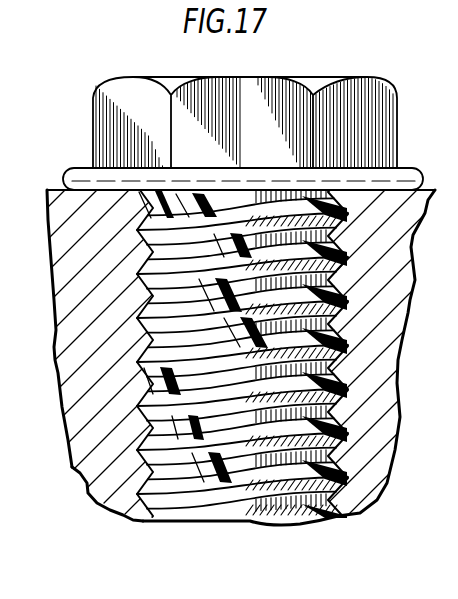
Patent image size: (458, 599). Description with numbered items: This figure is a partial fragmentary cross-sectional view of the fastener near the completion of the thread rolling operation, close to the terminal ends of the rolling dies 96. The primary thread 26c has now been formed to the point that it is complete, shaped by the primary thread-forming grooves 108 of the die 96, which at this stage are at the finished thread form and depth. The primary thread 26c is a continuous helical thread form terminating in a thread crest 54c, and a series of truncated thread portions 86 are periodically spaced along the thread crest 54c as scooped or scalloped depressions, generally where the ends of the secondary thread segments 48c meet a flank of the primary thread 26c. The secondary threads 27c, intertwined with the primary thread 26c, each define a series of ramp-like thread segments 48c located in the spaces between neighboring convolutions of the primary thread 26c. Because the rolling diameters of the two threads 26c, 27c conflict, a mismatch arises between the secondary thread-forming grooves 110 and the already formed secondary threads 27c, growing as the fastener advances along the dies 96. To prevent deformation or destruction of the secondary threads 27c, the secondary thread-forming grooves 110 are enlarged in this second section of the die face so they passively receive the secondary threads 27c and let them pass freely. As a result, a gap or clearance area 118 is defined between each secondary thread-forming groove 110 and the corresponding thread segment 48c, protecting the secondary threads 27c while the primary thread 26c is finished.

The primary thread 26c is at (135, 222).
The secondary thread 27c is at (163, 252).
The die 96 is at (53, 297).
The thread crest 54c is at (123, 489).
The truncated thread portion 86 is at (157, 435).
The primary thread-forming groove 108 is at (147, 458).
The thread segment 48c is at (322, 405).
The secondary thread-forming groove 110 is at (147, 370).
The clearance area 118 is at (153, 392).